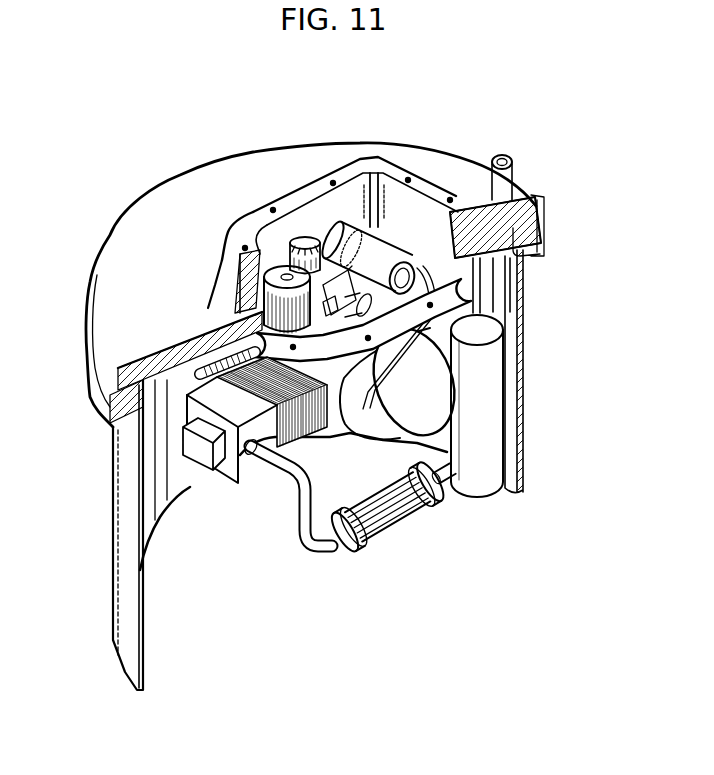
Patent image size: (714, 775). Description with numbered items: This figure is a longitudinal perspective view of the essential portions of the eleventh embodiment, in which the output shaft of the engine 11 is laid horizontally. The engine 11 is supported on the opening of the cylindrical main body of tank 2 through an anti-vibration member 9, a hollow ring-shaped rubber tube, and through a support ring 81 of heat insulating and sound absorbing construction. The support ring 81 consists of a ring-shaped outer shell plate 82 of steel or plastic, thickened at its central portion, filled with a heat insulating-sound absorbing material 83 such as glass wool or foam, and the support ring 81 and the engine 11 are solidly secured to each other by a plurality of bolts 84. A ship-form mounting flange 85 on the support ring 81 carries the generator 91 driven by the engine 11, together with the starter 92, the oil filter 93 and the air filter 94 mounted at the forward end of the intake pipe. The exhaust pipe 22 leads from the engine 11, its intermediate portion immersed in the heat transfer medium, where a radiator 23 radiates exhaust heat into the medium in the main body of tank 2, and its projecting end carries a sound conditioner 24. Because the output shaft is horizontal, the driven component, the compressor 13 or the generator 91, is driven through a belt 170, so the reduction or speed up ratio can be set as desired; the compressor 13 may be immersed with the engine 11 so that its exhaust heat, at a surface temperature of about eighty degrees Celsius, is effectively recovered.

The main body of tank 2 is at (520, 368).
The anti-vibration member 9 is at (542, 224).
The engine 11 is at (255, 483).
The compressor 13 is at (357, 227).
The exhaust pipe 22 is at (513, 165).
The radiator 23 is at (398, 524).
The sound conditioner 24 is at (482, 492).
The support ring 81 is at (108, 189).
The outer shell plate 82 is at (168, 345).
The heat insulating-sound absorbing material 83 is at (122, 366).
The bolts 84 is at (273, 207).
The mounting flange 85 is at (480, 290).
The generator 91 is at (378, 175).
The starter 92 is at (348, 245).
The oil filter 93 is at (305, 239).
The air filter 94 is at (246, 228).
The belt 170 is at (405, 262).